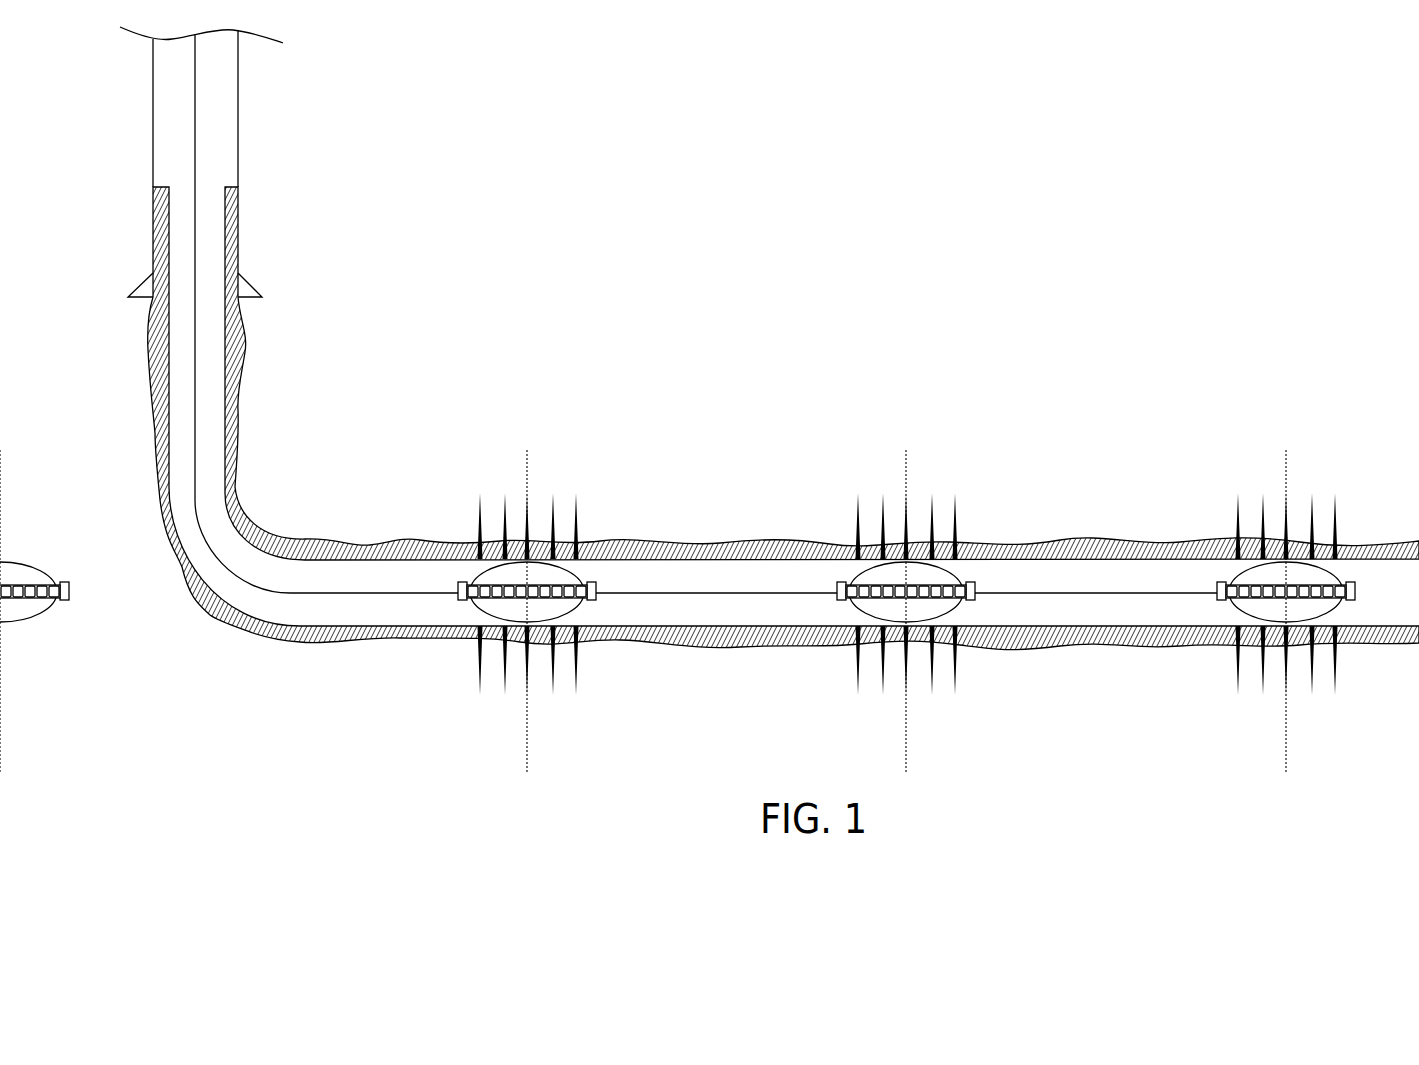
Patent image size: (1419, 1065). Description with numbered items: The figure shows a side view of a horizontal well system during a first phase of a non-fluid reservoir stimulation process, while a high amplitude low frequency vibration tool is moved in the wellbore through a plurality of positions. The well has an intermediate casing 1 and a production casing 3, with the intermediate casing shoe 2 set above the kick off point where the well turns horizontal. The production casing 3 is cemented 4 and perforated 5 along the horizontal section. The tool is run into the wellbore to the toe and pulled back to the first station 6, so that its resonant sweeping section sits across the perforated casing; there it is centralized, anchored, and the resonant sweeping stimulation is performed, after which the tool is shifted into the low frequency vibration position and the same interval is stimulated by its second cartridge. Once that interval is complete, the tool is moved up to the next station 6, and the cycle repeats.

The intermediate casing 1 is at (238, 105).
The intermediate casing shoe 2 is at (257, 285).
The production casing 3 is at (225, 428).
The cement 4 is at (312, 538).
The perforations 5 is at (578, 518).
The station 6 is at (581, 575).